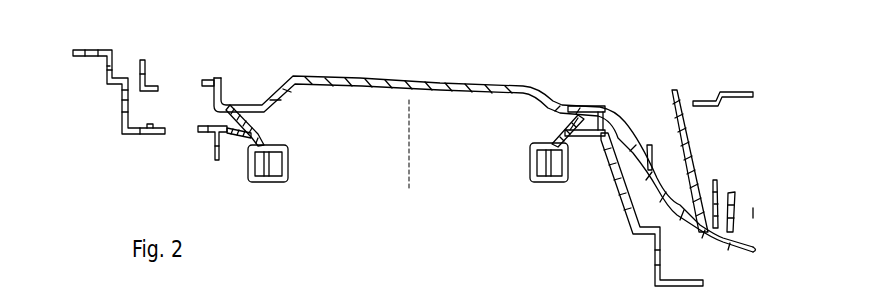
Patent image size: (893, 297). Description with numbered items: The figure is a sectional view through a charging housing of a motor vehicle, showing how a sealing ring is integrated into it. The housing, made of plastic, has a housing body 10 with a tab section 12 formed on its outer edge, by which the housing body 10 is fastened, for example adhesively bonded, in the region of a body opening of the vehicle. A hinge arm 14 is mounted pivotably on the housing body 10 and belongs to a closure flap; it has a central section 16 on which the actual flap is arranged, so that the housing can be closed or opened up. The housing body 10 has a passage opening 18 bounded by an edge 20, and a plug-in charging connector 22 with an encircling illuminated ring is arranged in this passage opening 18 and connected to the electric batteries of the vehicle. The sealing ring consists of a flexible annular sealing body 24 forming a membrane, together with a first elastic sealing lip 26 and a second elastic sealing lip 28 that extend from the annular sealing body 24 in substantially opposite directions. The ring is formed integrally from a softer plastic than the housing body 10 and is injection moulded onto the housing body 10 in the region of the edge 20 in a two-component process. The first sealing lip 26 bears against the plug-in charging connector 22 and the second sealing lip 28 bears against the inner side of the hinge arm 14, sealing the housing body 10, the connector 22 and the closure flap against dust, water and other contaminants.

The housing body 10 is at (130, 134).
The tab section 12 is at (90, 55).
The hinge arm 14 is at (700, 222).
The central section 16 is at (438, 90).
The passage opening 18 is at (367, 130).
The edge 20 is at (595, 112).
The plug-in charging connector 22 is at (280, 178).
The annular sealing body 24 is at (237, 138).
The first elastic sealing lip 26 is at (257, 135).
The second elastic sealing lip 28 is at (240, 117).